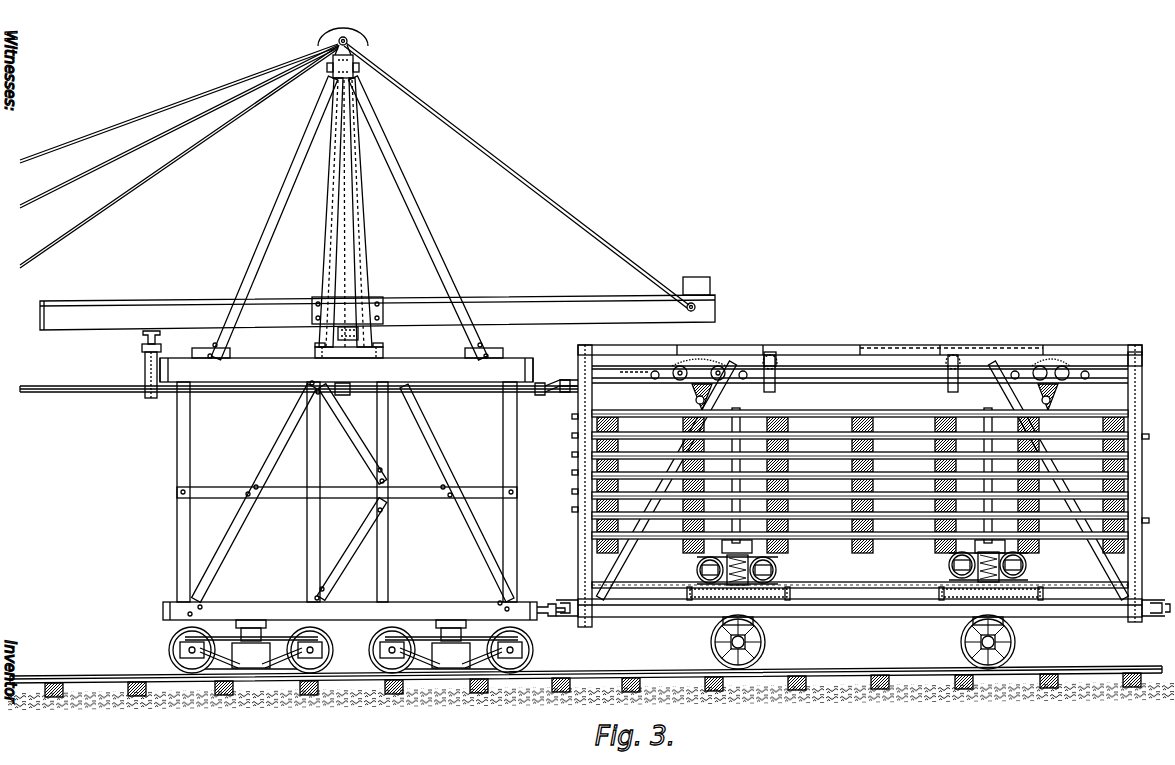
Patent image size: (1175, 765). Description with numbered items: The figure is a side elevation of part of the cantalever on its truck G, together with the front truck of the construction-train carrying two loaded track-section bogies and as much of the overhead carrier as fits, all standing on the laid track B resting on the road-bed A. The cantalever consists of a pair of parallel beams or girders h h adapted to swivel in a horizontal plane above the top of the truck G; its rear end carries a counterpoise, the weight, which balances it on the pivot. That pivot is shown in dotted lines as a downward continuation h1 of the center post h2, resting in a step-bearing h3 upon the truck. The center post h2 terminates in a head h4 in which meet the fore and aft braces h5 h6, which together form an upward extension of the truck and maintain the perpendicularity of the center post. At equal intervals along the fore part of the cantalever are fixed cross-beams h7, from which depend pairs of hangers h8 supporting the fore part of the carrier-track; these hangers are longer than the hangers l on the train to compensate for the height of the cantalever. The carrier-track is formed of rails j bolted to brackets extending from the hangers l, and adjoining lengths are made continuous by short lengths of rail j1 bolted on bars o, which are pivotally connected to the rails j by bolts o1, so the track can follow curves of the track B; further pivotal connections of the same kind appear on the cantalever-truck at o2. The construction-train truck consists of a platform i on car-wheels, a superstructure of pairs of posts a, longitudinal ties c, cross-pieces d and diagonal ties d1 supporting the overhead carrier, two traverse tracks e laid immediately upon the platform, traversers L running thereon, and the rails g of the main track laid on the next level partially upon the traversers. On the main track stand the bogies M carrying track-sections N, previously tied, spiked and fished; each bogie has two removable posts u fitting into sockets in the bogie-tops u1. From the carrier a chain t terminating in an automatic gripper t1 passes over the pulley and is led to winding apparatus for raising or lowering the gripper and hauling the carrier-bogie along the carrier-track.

The beams or girders of the cantalever h is at (91, 309).
The pivot h1 is at (360, 333).
The center post h2 is at (347, 270).
The step-bearing h3 is at (317, 350).
The head h4 is at (353, 31).
The fore braces h5 is at (354, 175).
The aft braces h6 is at (362, 160).
The cross-beams or girders h7 is at (144, 338).
The hangers h8 is at (149, 390).
The rails of the carrier-track j is at (61, 393).
The short lengths of rail j1 is at (549, 384).
The bridge-pieces or bars o is at (539, 388).
The bolts o1 is at (567, 391).
The pivotal connections o2 is at (350, 386).
The truck of the cantalever G is at (346, 487).
The road-bed A is at (443, 690).
The counterpoise weight is at (712, 288).
The laid track B is at (1108, 664).
The posts a is at (582, 559).
The cross-pieces d is at (773, 348).
The diagonal ties d1 is at (840, 348).
The longitudinal ties c is at (905, 350).
The hangers l is at (864, 380).
The chain t is at (1067, 388).
The automatic gripper t1 is at (690, 400).
The track-sections N is at (908, 417).
The removable posts u is at (736, 463).
The bogie-tops u1 is at (740, 540).
The bogies M is at (697, 570).
The rails of the main track g is at (844, 582).
The traversers L is at (712, 592).
The traverse tracks e is at (689, 600).
The platform i is at (872, 604).